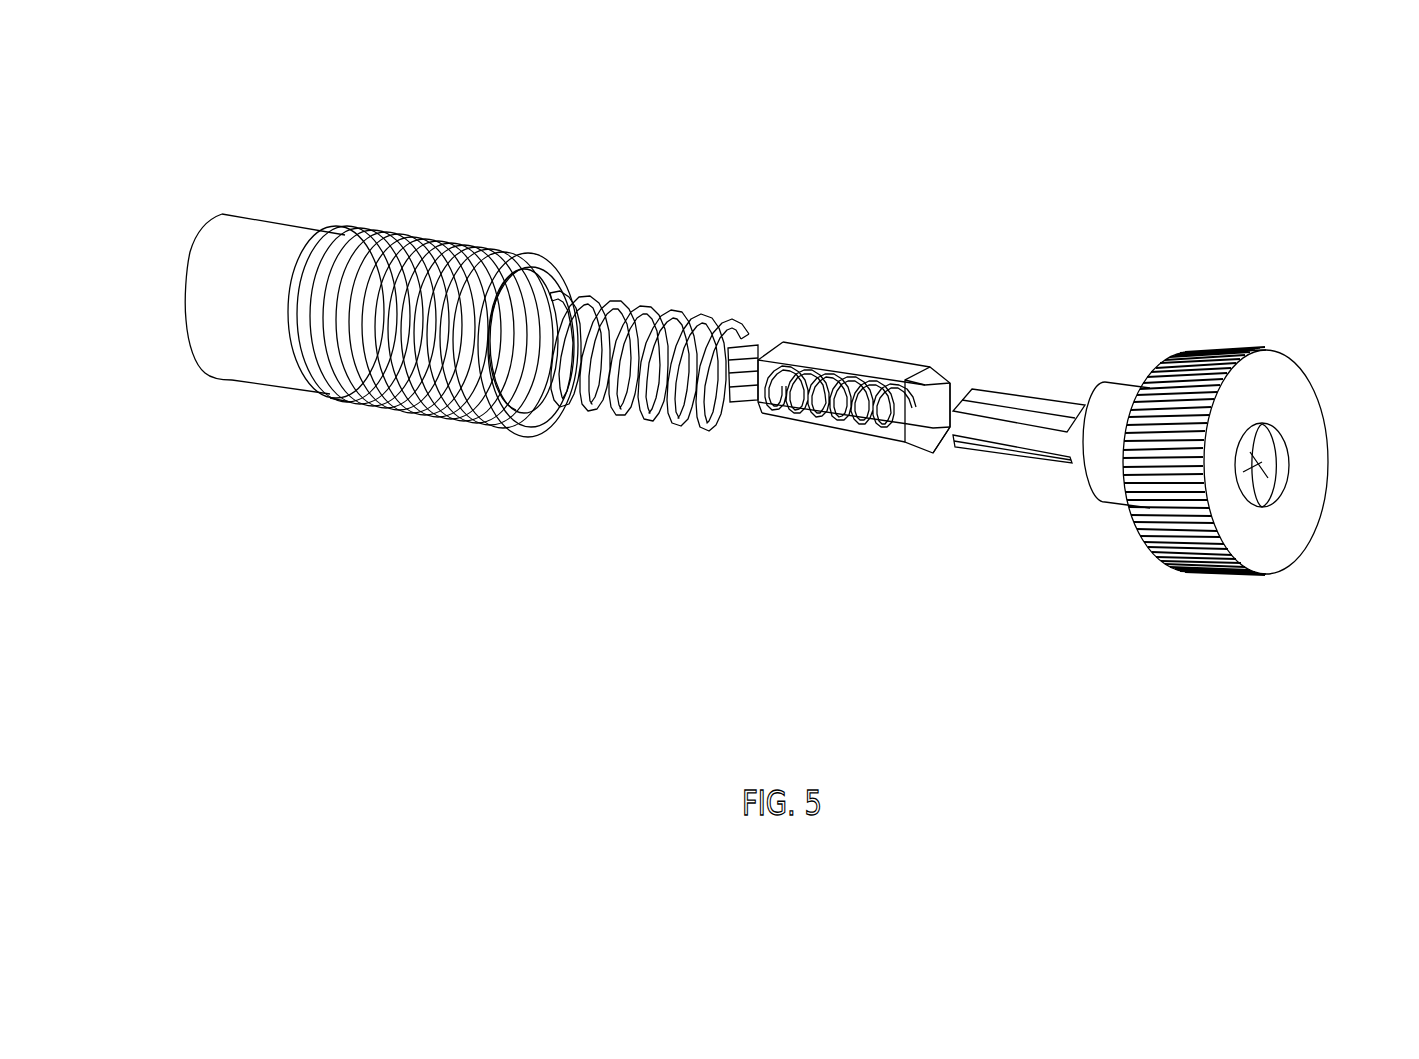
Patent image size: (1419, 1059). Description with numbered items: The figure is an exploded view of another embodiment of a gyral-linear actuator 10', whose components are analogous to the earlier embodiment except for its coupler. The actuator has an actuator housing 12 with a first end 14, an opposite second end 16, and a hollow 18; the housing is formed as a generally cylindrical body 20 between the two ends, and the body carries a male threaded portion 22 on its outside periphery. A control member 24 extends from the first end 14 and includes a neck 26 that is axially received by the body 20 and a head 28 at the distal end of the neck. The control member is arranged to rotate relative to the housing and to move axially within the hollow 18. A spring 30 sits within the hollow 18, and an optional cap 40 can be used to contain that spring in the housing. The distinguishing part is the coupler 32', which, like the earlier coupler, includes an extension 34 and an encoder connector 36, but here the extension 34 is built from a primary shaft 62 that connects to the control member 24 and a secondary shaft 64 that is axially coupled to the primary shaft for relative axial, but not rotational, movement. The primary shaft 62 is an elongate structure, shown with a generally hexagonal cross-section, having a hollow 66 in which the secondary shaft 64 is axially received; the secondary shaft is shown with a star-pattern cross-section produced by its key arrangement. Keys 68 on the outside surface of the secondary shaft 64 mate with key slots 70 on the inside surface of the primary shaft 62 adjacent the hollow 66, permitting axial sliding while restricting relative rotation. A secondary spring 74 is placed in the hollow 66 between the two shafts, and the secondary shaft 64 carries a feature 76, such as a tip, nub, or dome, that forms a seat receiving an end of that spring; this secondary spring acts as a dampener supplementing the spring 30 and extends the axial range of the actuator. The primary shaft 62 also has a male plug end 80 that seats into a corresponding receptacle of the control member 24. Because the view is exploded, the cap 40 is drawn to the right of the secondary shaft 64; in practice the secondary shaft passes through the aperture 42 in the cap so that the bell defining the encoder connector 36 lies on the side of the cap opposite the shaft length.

The gyral-linear actuator 10' is at (750, 347).
The actuator housing 12 is at (481, 320).
The first end 14 is at (335, 412).
The second end 16 is at (536, 448).
The hollow 18 is at (527, 378).
The generally cylindrical body 20 is at (425, 268).
The male threaded portion 22 is at (553, 232).
The control member 24 is at (263, 216).
The neck 26 is at (302, 328).
The head 28 is at (190, 280).
The spring 30 is at (642, 300).
The coupler 32' is at (1023, 462).
The extension 34 is at (887, 423).
The encoder connector 36 is at (1130, 500).
The cap 40 is at (1240, 355).
The aperture 42 is at (1268, 478).
The primary shaft 62 is at (859, 423).
The secondary shaft 64 is at (1019, 443).
The hollow 66 is at (940, 452).
The key 68 is at (1097, 395).
The key slot 70 is at (952, 380).
The secondary spring 74 is at (767, 350).
The feature 76 is at (958, 450).
The male plug end 80 is at (748, 405).